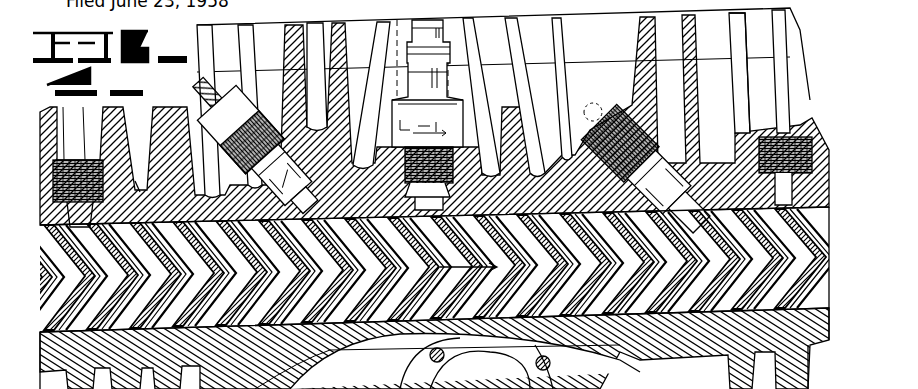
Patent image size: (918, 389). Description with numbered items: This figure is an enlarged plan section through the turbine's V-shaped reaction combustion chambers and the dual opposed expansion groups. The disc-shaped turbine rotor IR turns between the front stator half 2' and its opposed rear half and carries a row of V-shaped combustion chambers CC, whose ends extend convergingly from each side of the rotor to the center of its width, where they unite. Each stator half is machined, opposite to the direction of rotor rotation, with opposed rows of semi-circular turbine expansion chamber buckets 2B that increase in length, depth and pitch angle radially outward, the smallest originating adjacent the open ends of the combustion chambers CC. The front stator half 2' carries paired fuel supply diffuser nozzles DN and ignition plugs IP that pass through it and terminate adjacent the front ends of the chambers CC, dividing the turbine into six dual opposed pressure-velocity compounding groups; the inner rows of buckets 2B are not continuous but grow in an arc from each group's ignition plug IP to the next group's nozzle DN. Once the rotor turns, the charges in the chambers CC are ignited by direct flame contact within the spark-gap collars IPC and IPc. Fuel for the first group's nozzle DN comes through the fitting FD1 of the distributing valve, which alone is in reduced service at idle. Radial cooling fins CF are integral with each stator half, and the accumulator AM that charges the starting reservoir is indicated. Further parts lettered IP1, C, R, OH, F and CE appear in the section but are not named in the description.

The front stator half 2' is at (70, 186).
The turbine expansion chamber buckets 2B is at (374, 272).
The fuel delivery tubing fitting FD1 is at (196, 90).
The ignition plug IP is at (412, 86).
The ignition plug seat IP1 is at (448, 108).
The fuel supply diffuser nozzle DN is at (532, 185).
The V-shaped combustion chamber CC is at (612, 256).
The compressor valve C is at (650, 172).
The cooling fins CF is at (783, 92).
The spark-gap collar IPc is at (785, 160).
The spark-gap collar IPC is at (89, 239).
The turbine rotor IR is at (53, 375).
The accumulator AM is at (272, 368).
The rocker R is at (441, 359).
The oil hole OH is at (487, 360).
The fuel passage F is at (535, 362).
The cylinder end CE is at (817, 385).